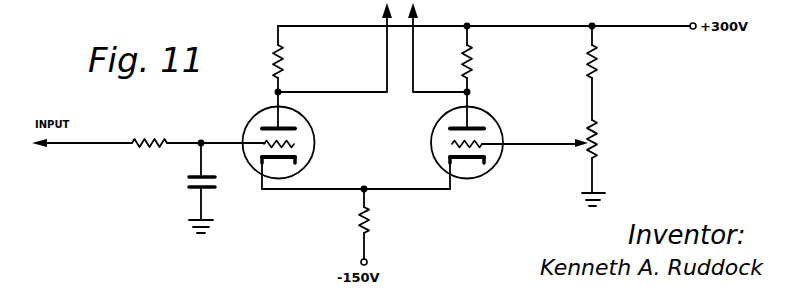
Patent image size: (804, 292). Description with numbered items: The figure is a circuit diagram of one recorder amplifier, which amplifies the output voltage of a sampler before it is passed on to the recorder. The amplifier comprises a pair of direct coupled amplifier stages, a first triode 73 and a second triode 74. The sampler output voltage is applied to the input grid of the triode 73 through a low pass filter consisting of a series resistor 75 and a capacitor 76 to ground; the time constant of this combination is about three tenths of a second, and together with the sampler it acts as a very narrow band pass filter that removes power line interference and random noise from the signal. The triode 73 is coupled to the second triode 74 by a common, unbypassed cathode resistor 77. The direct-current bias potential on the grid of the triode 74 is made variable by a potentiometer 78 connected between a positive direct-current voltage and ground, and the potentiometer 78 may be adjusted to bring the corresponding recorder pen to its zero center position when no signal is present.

The triode 73 is at (246, 121).
The second triode 74 is at (431, 150).
The series resistor 75 is at (148, 150).
The capacitor 76 is at (178, 182).
The cathode resistor 77 is at (372, 218).
The potentiometer 78 is at (600, 142).